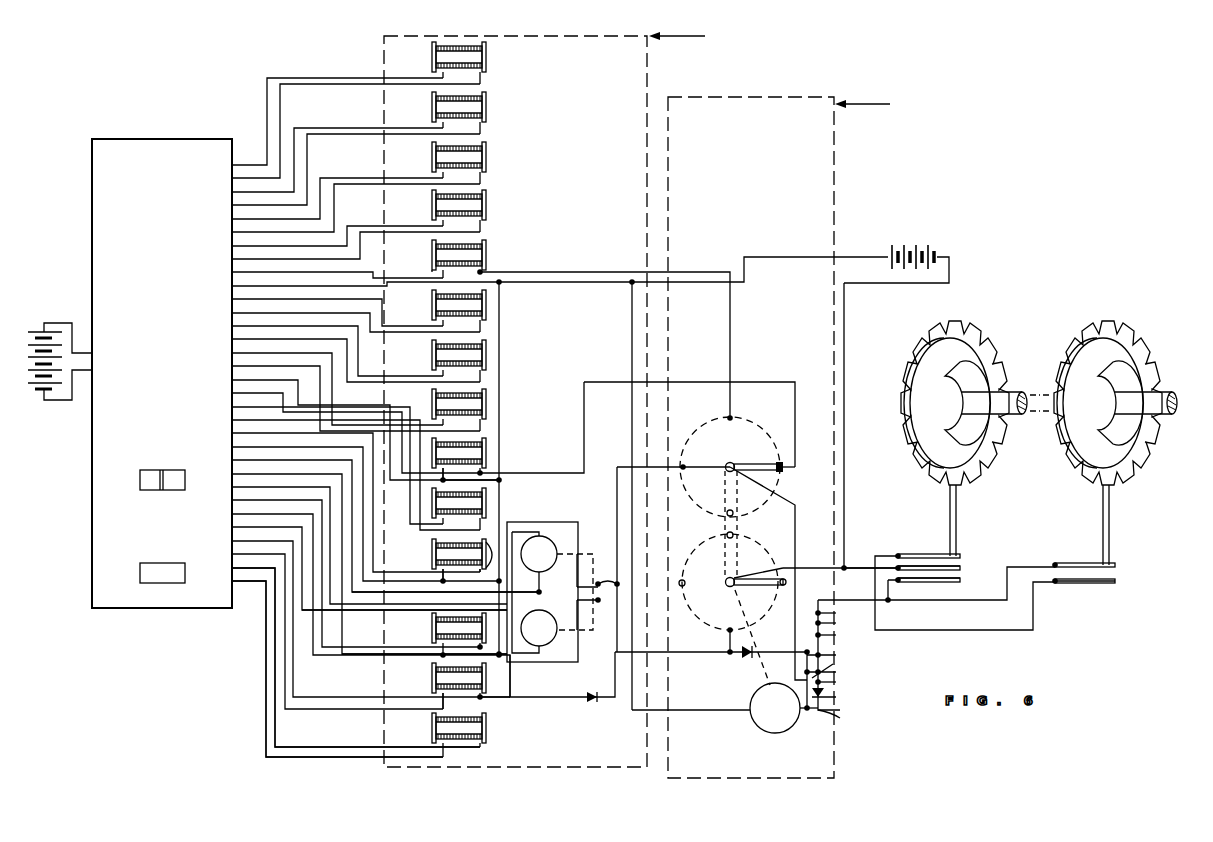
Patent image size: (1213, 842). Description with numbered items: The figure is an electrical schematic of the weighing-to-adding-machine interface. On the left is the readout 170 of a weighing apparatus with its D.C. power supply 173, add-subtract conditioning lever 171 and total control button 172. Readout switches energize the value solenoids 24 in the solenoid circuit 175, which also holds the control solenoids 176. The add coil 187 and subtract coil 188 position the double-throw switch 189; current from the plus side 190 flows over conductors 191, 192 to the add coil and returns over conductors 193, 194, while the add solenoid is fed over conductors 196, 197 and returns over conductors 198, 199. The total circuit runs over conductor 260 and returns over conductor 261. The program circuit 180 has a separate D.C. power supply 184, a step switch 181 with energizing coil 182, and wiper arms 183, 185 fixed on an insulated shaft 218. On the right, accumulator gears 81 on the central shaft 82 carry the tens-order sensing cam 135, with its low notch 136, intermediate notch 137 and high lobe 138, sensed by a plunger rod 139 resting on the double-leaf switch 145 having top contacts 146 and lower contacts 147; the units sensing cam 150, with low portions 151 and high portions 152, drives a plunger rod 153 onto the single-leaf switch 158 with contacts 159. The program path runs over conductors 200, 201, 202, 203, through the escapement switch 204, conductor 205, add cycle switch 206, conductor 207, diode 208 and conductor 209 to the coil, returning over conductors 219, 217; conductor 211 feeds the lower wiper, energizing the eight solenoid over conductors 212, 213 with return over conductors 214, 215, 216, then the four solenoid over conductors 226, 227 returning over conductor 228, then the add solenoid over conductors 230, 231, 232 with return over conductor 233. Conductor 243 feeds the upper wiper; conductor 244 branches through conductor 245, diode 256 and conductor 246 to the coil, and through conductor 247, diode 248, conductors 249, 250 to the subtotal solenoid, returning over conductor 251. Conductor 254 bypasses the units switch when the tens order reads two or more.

The value solenoids 24 is at (492, 206).
The accumulator gear 81 is at (1122, 333).
The central shaft 82 is at (1150, 392).
The tens-order sensing cam 135 is at (984, 362).
The low notch 136 is at (965, 447).
The intermediate notch 137 is at (930, 472).
The high lobe 138 is at (1022, 452).
The plunger rod 139 is at (957, 504).
The double-leaf switch 145 is at (976, 552).
The top contacts 146 is at (962, 566).
The lower contacts 147 is at (962, 580).
The units sensing cam 150 is at (1104, 462).
The low portions 151 is at (1078, 462).
The high portions 152 is at (1136, 466).
The plunger rod 153 is at (1110, 510).
The single-leaf switch 158 is at (1126, 570).
The contacts 159 is at (1116, 580).
The readout 170 is at (176, 142).
The add-subtract conditioning lever 171 is at (157, 470).
The total control button 172 is at (155, 563).
The D.C. power supply 173 is at (46, 322).
The solenoid circuit 175 is at (655, 66).
The control solenoids 176 is at (420, 633).
The program circuit 180 is at (836, 134).
The step switch 181 is at (758, 422).
The energizing coil 182 is at (772, 722).
The wiper arm 183 is at (784, 470).
The D.C. power supply 184 is at (920, 246).
The wiper arm 185 is at (758, 586).
The add coil 187 is at (558, 537).
The subtract coil 188 is at (548, 643).
The double-throw switch 189 is at (598, 583).
The plus side 190 is at (63, 323).
The conductor 191 is at (530, 598).
The conductor 192 is at (541, 580).
The conductor 193 is at (530, 530).
The conductor 194 is at (60, 400).
The conductor 196 is at (440, 565).
The conductor 197 is at (482, 543).
The conductor 198 is at (440, 566).
The conductor 199 is at (380, 590).
The conductor 200 is at (889, 283).
The conductor 201 is at (858, 566).
The conductor 202 is at (990, 632).
The conductor 203 is at (957, 605).
The escapement switch 204 is at (839, 655).
The conductor 205 is at (839, 631).
The add cycle switch 206 is at (835, 652).
The conductor 207 is at (838, 677).
The diode 208 is at (837, 696).
The conductor 209 is at (842, 715).
The conductor 211 is at (796, 598).
The conductor 212 is at (586, 382).
The conductor 213 is at (484, 472).
The conductor 214 is at (440, 476).
The conductor 215 is at (501, 485).
The conductor 216 is at (500, 370).
The conductor 217 is at (780, 258).
The insulated shaft 218 is at (740, 523).
The conductor 219 is at (722, 710).
The conductor 226 is at (732, 323).
The conductor 227 is at (482, 270).
The conductor 228 is at (432, 271).
The conductor 230 is at (617, 467).
The conductor 231 is at (617, 600).
The conductor 232 is at (572, 525).
The conductor 233 is at (470, 598).
The conductor 243 is at (810, 568).
The conductor 244 is at (729, 640).
The conductor 245 is at (776, 652).
The conductor 246 is at (780, 688).
The conductor 247 is at (674, 648).
The diode 248 is at (593, 700).
The conductor 249 is at (540, 698).
The conductor 250 is at (500, 695).
The conductor 251 is at (440, 698).
The conductor 254 is at (890, 588).
The diode 256 is at (745, 656).
The conductor 260 is at (300, 735).
The conductor 261 is at (305, 762).